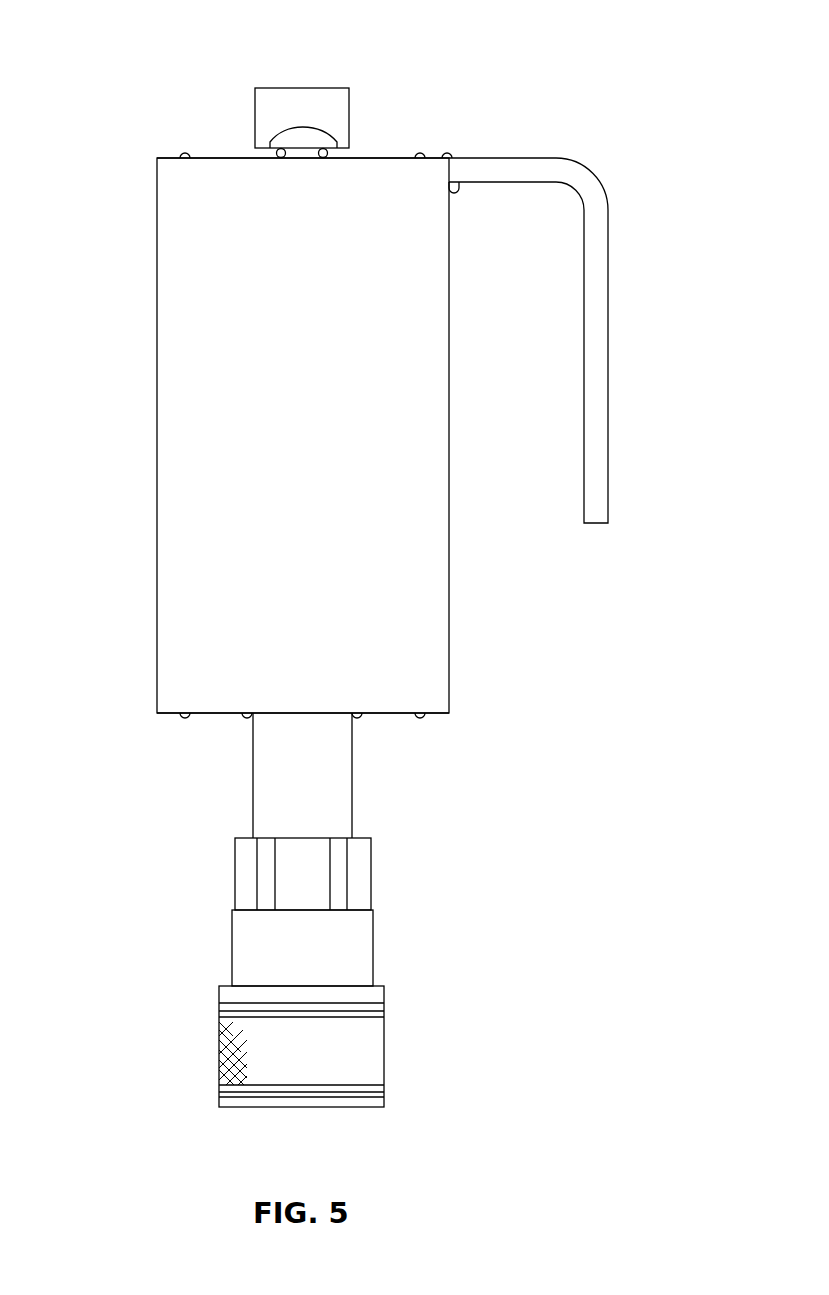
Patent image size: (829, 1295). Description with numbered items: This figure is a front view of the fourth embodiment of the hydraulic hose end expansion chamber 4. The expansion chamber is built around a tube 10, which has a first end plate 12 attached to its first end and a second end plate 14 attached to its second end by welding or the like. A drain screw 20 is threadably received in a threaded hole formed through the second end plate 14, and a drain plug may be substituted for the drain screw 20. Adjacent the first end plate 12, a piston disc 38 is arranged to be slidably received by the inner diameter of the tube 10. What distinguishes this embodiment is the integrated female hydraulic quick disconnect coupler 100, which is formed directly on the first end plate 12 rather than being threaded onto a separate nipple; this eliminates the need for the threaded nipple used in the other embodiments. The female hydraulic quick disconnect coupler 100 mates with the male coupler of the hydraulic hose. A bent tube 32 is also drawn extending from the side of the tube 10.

The hydraulic hose end expansion chamber 4 is at (568, 683).
The tube 10 is at (156, 512).
The first end plate 12 is at (214, 716).
The second end plate 14 is at (387, 157).
The drain screw 20 is at (303, 88).
The pipe 32 is at (609, 310).
The piston disc 38 is at (383, 715).
The female hydraulic quick disconnect coupler 100 is at (452, 934).